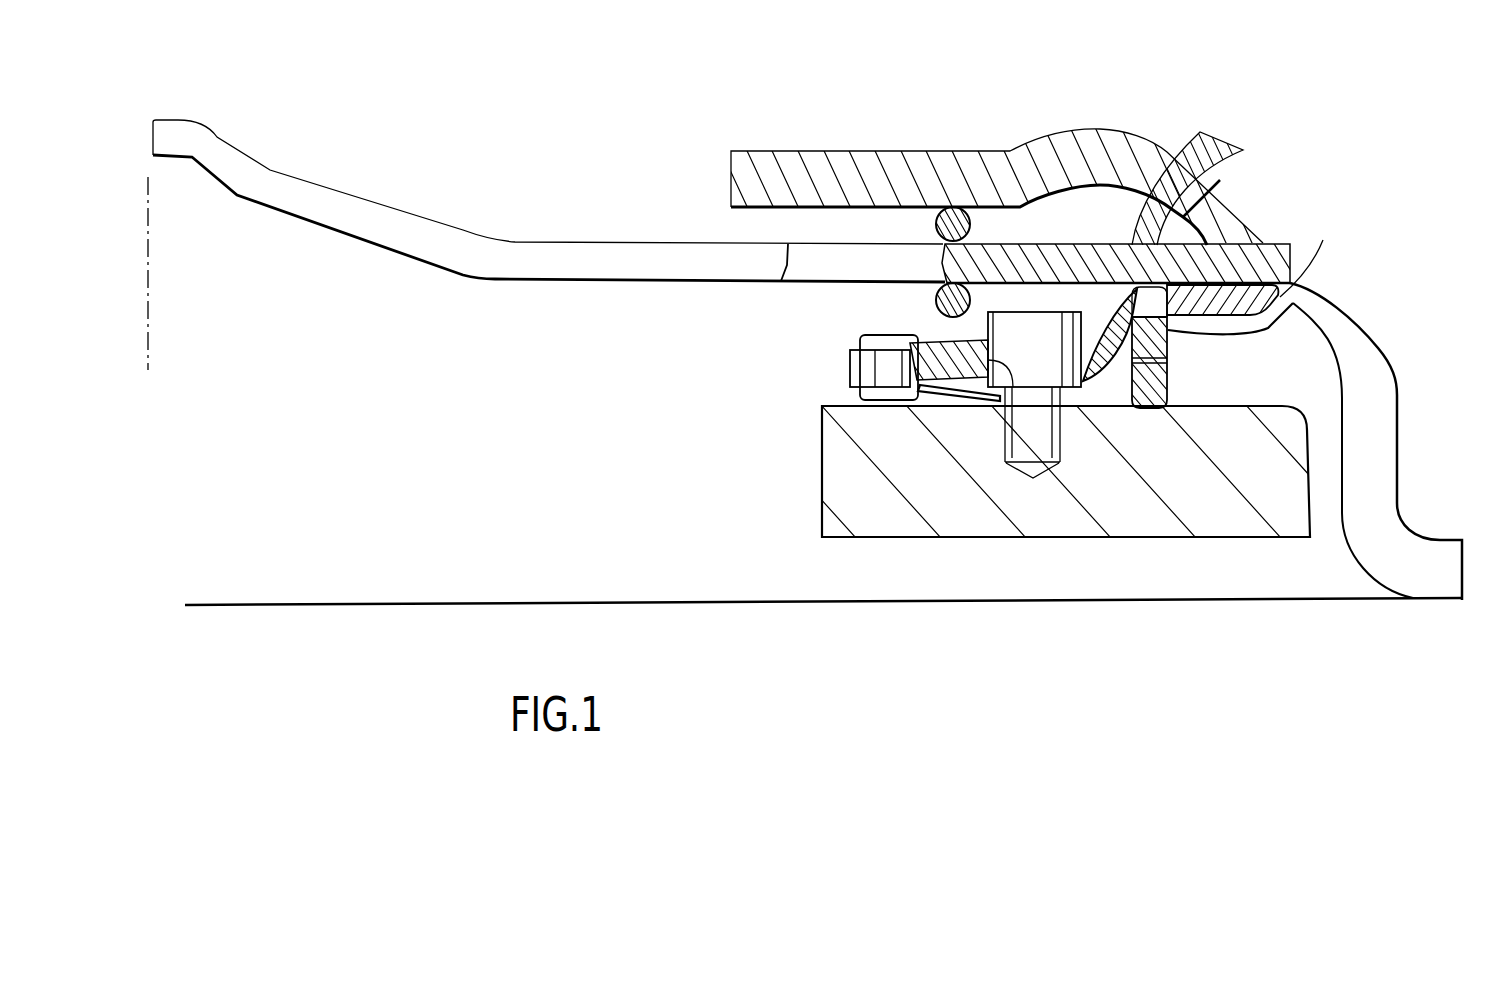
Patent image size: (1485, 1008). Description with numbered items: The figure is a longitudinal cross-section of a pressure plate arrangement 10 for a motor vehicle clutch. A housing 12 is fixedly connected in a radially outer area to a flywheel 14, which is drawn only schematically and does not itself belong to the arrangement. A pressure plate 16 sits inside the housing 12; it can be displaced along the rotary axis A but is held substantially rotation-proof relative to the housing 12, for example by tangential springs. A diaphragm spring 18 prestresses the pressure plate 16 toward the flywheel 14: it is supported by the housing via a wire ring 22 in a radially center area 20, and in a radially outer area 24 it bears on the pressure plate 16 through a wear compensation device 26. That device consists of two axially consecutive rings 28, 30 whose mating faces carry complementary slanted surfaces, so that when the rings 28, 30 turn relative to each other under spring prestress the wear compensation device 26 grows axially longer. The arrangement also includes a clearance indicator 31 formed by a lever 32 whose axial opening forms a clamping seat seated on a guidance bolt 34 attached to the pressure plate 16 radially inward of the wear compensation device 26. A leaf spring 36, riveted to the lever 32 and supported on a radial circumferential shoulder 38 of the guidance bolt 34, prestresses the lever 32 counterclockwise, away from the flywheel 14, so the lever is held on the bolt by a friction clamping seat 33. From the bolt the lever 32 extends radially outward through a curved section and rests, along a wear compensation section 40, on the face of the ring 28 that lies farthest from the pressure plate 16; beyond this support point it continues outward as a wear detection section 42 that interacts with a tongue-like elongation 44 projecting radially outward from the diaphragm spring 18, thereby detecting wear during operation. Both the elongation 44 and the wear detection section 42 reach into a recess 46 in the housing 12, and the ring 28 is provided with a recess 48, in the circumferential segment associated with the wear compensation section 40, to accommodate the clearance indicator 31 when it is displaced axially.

The pressure plate arrangement 10 is at (966, 135).
The housing 12 is at (1160, 140).
The flywheel 14 is at (1262, 603).
The pressure plate 16 is at (818, 455).
The diaphragm spring 18 is at (393, 208).
The radially center area 20 is at (905, 243).
The wire ring 22 is at (963, 208).
The radially outer area 24 is at (1241, 149).
The wear compensation device 26 is at (1185, 350).
The ring 28 is at (1282, 316).
The ring 30 is at (1170, 382).
The clearance indicator 31 is at (876, 313).
The lever 32 is at (850, 370).
The friction clamping seat 33 is at (1005, 407).
The guidance bolt 34 is at (1093, 392).
The leaf spring 36 is at (937, 406).
The radial circumferential shoulder 38 is at (1080, 407).
The wear compensation section 40 is at (1113, 298).
The wear detection section 42 is at (1293, 303).
The tongue-like elongation 44 is at (1282, 243).
The recess 46 is at (1397, 440).
The recess 48 is at (1203, 132).